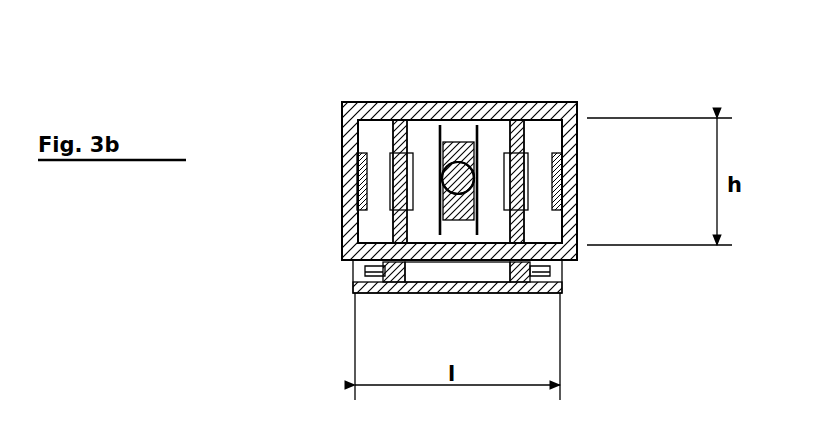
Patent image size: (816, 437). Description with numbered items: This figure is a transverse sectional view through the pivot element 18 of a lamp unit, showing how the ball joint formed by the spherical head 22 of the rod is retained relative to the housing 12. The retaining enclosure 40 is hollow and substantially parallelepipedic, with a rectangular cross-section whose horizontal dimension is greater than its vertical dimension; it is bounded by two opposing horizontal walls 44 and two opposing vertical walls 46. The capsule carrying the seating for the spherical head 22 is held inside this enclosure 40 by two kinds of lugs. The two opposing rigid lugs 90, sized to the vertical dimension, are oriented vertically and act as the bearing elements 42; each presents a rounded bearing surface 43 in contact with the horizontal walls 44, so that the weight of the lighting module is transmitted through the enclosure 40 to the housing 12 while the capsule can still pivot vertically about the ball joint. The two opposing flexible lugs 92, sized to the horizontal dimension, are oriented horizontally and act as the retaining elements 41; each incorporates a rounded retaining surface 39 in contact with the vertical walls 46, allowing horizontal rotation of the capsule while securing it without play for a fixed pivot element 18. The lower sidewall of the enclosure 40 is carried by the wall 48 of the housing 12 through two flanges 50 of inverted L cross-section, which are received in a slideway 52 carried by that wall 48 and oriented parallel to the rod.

The housing 12 is at (542, 296).
The pivot element 18 is at (427, 138).
The spherical head 22 is at (460, 150).
The retaining surface 39 is at (343, 177).
The retaining enclosure 40 is at (438, 101).
The retaining element 41 is at (357, 198).
The bearing element 42 is at (387, 127).
The bearing surface 43 is at (521, 117).
The horizontal wall 44 is at (537, 125).
The vertical wall 46 is at (350, 138).
The wall of the housing 48 is at (445, 250).
The flange 50 is at (376, 294).
The slideway 52 is at (562, 290).
The rigid lug 90 is at (517, 230).
The flexible lug 92 is at (345, 155).